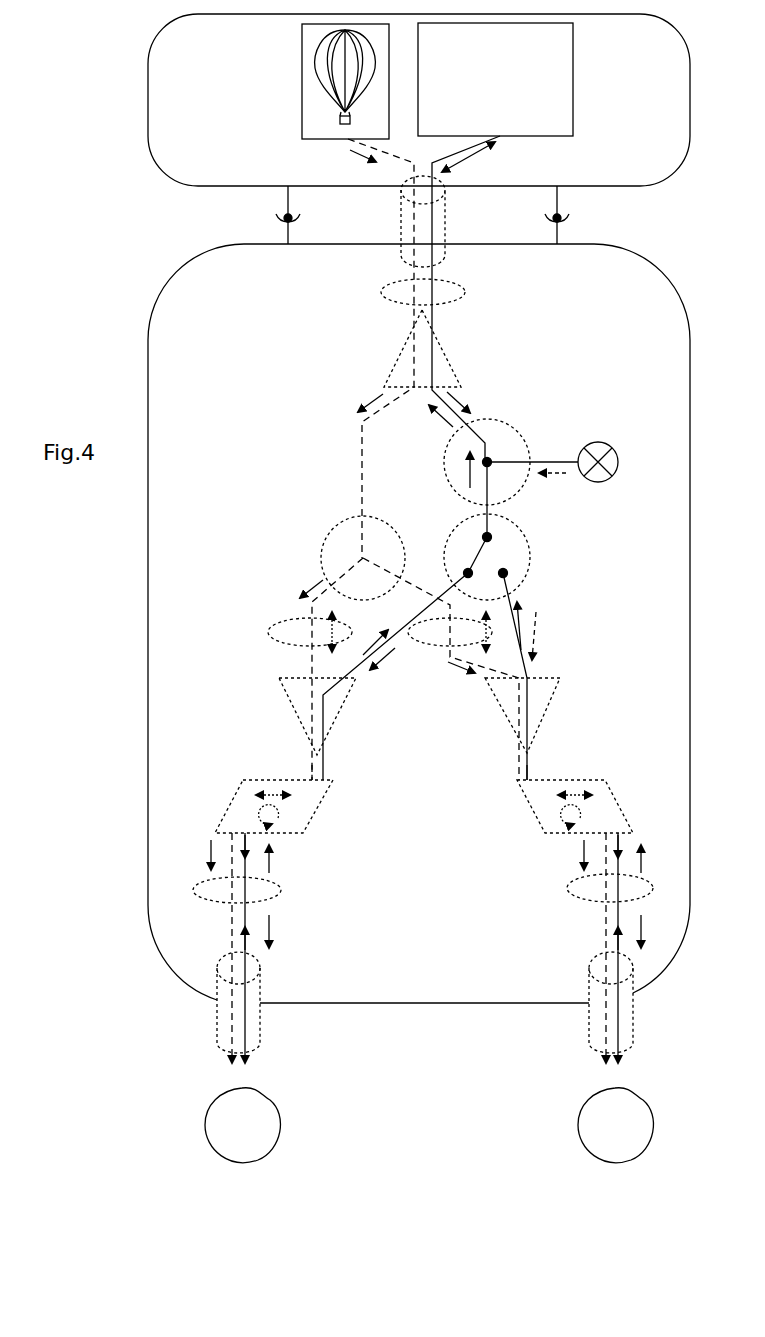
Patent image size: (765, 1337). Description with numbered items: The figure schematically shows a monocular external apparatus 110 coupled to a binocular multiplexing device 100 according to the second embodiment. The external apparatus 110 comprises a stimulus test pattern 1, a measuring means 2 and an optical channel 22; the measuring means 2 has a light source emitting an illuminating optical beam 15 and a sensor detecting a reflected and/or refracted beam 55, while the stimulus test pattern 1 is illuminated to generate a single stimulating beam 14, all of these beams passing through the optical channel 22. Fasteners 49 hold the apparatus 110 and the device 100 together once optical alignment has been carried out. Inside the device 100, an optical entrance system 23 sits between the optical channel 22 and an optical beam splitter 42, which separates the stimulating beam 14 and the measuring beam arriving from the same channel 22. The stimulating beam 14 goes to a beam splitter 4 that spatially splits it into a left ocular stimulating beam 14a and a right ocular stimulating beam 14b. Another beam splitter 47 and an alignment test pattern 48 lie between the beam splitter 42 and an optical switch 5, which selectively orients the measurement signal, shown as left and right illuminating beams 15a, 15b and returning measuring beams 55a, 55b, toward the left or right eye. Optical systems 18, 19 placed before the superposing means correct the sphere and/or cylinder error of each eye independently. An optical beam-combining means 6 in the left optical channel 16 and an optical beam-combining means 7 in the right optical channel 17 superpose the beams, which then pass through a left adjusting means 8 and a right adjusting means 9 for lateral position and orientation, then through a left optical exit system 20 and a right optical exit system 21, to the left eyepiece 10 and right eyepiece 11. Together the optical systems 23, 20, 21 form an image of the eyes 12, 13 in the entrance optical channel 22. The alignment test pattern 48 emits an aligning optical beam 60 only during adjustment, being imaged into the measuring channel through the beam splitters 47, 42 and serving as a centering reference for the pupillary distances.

The stimulus test pattern 1 is at (302, 120).
The measuring means 2 is at (573, 48).
The beam splitter 4 is at (322, 558).
The optical switch 5 is at (530, 562).
The optical beam-combining means 6 is at (290, 700).
The optical beam-combining means 7 is at (548, 705).
The means for adjusting lateral position and orientation 8 is at (235, 805).
The means for adjusting lateral position and orientation 9 is at (615, 805).
The left eyepiece 10 is at (217, 1013).
The right eyepiece 11 is at (589, 1020).
The eye 12 is at (205, 1125).
The eye 13 is at (652, 1125).
The stimulating beam 14 is at (362, 160).
The left ocular stimulating beam 14a is at (308, 590).
The right ocular stimulating beam 14b is at (450, 672).
The illuminating optical beam 15 is at (462, 167).
The left illuminating beam 15a is at (398, 658).
The right illuminating beam 15b is at (545, 640).
The left optical channel 16 is at (312, 768).
The right optical channel 17 is at (530, 762).
The optical system 18 is at (268, 632).
The optical system 19 is at (430, 646).
The left optical exit system 20 is at (283, 890).
The right optical exit system 21 is at (567, 888).
The optical channel 22 is at (445, 212).
The optical entrance system 23 is at (382, 292).
The optical beam splitter 42 is at (452, 365).
The beam splitter 47 is at (510, 423).
The alignment test pattern 48 is at (600, 442).
The fasteners 49 is at (288, 238).
The reflected and/or refracted optical beam 55 is at (494, 150).
The left measuring beam 55a is at (355, 662).
The right measuring beam 55b is at (530, 612).
The aligning optical beam 60 is at (448, 472).
The binocular multiplexing device 100 is at (690, 352).
The monocular apparatus 110 is at (690, 76).